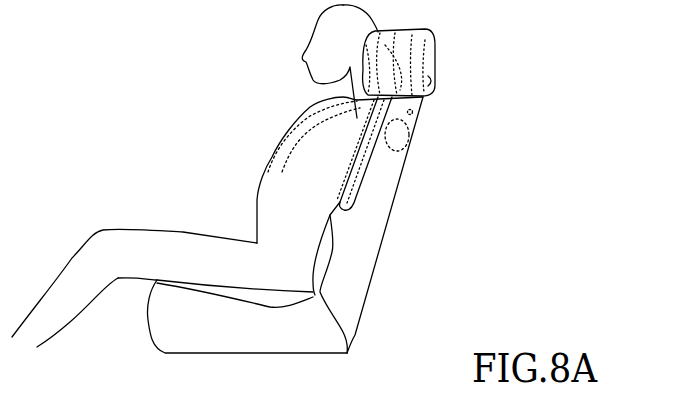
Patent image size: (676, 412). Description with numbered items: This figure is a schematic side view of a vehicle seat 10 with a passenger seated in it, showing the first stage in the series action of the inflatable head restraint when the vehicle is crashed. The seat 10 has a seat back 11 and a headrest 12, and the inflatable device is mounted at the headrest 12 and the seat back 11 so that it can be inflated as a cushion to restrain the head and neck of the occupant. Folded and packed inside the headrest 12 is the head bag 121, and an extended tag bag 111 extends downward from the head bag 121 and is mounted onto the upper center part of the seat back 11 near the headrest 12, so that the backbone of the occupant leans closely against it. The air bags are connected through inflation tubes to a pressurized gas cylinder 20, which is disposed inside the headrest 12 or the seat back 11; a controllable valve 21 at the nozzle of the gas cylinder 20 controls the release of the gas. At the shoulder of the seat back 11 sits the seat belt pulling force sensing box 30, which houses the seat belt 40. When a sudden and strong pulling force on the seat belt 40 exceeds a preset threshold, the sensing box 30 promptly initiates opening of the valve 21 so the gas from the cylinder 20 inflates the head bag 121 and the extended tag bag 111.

The seat 10 is at (320, 346).
The seat back 11 is at (350, 268).
The headrest 12 is at (427, 45).
The head bag 121 is at (385, 45).
The seat belt pulling force sensing box 30 is at (425, 80).
The extended tag bag 111 is at (411, 112).
The controllable valve 21 is at (410, 127).
The pressurized gas cylinder 20 is at (404, 147).
The seat belt 40 is at (295, 133).